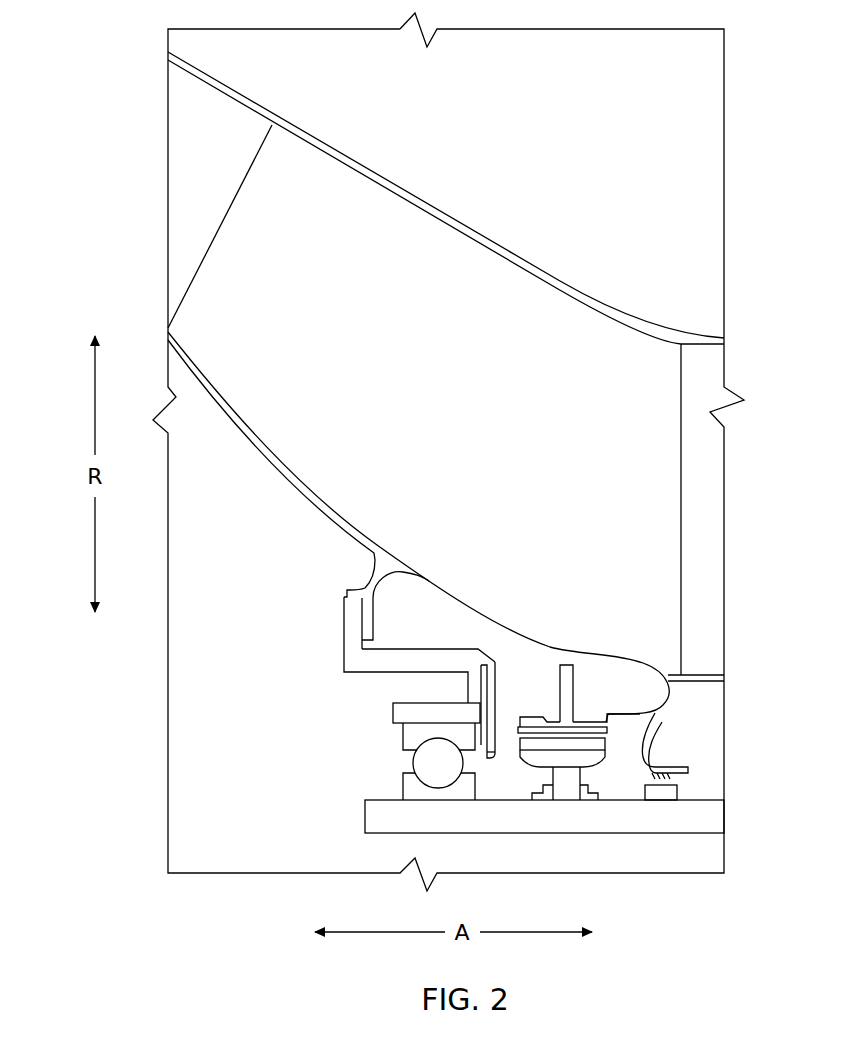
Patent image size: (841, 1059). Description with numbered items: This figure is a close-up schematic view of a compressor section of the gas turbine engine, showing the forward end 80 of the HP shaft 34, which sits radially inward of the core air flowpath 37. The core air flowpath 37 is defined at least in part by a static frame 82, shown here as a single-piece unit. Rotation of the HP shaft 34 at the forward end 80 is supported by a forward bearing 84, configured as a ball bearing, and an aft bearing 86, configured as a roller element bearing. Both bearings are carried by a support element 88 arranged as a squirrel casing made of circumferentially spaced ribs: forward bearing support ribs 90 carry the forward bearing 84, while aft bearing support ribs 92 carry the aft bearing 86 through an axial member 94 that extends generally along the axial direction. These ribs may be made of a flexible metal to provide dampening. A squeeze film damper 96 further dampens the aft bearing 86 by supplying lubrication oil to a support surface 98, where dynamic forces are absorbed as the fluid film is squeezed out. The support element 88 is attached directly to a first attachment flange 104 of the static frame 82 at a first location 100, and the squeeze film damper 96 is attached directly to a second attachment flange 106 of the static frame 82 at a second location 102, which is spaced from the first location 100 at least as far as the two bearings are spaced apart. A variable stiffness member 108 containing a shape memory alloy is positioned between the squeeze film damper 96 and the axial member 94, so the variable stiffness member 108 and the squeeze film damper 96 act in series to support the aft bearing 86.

The HP shaft 34 is at (562, 823).
The core air flowpath 37 is at (547, 494).
The forward end 80 is at (516, 853).
The static frame 82 is at (493, 613).
The forward bearing 84 is at (410, 763).
The aft bearing 86 is at (590, 779).
The support element 88 is at (453, 636).
The forward bearing support ribs 90 is at (473, 712).
The aft bearing support ribs 92 is at (496, 693).
The axial member 94 is at (495, 759).
The squeeze film damper 96 is at (595, 728).
The support surface 98 is at (574, 748).
The first location 100 is at (402, 597).
The second location 102 is at (580, 672).
The first attachment flange 104 is at (375, 633).
The second attachment flange 106 is at (577, 700).
The variable stiffness member 108 is at (647, 738).